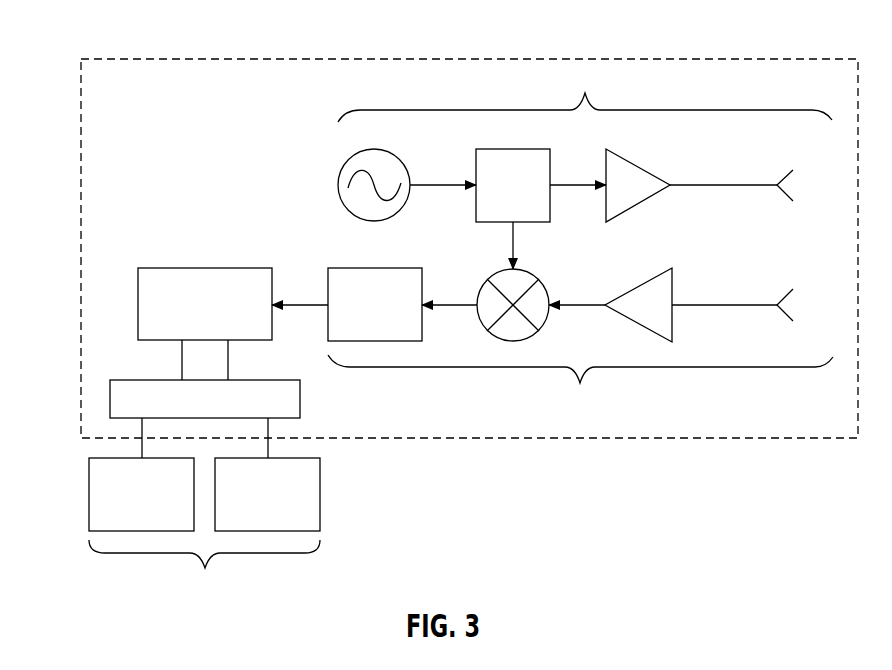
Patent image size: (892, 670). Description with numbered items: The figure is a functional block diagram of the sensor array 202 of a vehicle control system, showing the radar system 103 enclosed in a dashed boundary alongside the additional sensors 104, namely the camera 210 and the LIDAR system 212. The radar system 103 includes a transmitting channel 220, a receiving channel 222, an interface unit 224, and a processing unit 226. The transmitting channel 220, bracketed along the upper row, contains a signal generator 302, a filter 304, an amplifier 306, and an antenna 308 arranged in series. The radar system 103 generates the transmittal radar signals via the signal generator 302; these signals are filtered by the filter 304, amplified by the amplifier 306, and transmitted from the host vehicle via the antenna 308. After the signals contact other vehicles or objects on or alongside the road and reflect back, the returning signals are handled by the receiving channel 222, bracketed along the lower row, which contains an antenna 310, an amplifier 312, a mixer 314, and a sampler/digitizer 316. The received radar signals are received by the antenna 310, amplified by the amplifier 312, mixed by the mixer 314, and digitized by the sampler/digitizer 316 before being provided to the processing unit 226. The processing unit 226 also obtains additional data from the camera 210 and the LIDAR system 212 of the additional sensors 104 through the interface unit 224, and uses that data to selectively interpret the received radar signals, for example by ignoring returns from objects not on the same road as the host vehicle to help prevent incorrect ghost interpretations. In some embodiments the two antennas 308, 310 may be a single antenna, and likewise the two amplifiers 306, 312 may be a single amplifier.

The radar system 103 is at (121, 58).
The sensor array 202 is at (788, 20).
The transmitting channel 220 is at (585, 92).
The receiving channel 222 is at (580, 386).
The signal generator 302 is at (338, 185).
The filter 304 is at (513, 149).
The amplifier 306 is at (640, 167).
The antenna 308 is at (786, 196).
The antenna 310 is at (786, 316).
The amplifier 312 is at (672, 287).
The mixer 314 is at (534, 276).
The sampler/digitizer 316 is at (376, 268).
The processing unit 226 is at (188, 268).
The interface unit 224 is at (157, 380).
The camera 210 is at (89, 495).
The LIDAR system 212 is at (320, 495).
The additional sensors 104 is at (204, 572).